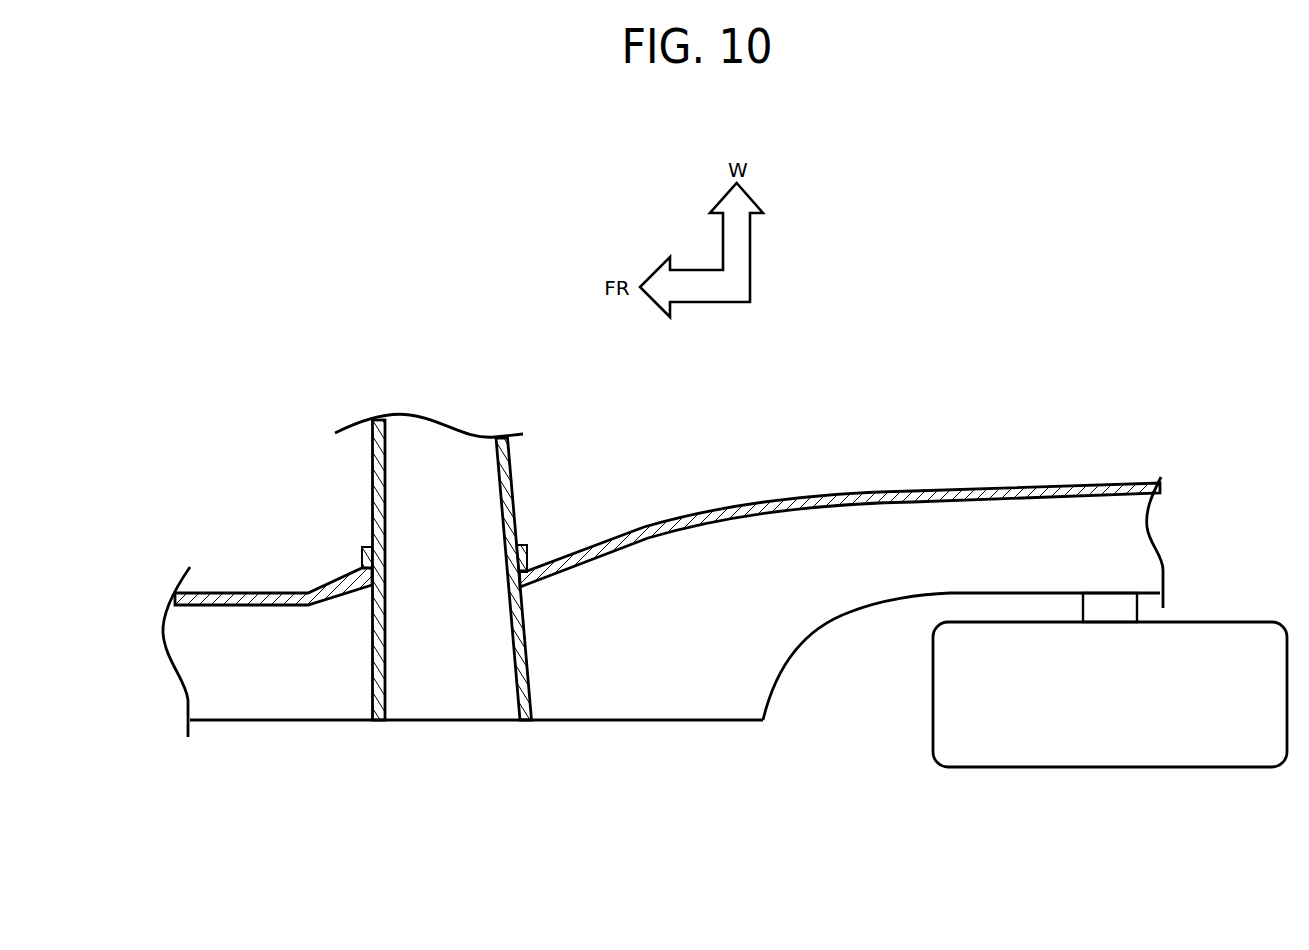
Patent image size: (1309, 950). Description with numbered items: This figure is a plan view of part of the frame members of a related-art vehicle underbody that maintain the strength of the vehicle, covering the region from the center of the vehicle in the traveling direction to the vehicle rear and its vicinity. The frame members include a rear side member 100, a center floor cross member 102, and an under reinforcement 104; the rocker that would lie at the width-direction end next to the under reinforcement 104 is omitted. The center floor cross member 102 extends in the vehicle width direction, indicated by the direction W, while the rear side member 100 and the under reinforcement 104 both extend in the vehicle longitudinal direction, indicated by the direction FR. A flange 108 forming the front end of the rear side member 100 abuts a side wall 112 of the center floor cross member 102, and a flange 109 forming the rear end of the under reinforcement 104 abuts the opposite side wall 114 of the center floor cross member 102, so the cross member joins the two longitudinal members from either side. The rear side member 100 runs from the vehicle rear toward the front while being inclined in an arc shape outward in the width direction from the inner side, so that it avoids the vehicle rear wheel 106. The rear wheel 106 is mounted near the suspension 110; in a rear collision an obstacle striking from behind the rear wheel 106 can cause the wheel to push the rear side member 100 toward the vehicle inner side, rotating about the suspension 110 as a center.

The rear side member 100 is at (677, 745).
The center floor cross member 102 is at (451, 745).
The under reinforcement 104 is at (256, 745).
The vehicle rear wheel 106 is at (1110, 768).
The flange 108 is at (527, 563).
The flange 109 is at (362, 566).
The suspension 110 is at (1140, 610).
The side wall 112 is at (505, 475).
The side wall 114 is at (373, 473).